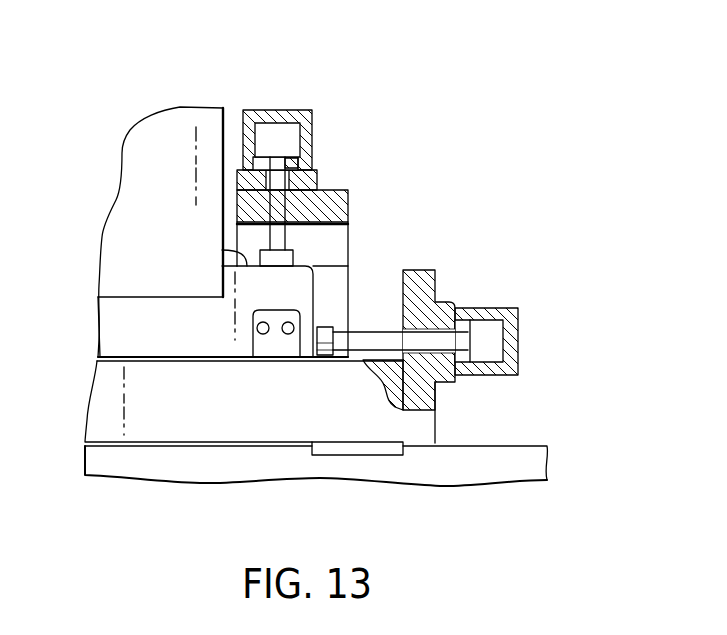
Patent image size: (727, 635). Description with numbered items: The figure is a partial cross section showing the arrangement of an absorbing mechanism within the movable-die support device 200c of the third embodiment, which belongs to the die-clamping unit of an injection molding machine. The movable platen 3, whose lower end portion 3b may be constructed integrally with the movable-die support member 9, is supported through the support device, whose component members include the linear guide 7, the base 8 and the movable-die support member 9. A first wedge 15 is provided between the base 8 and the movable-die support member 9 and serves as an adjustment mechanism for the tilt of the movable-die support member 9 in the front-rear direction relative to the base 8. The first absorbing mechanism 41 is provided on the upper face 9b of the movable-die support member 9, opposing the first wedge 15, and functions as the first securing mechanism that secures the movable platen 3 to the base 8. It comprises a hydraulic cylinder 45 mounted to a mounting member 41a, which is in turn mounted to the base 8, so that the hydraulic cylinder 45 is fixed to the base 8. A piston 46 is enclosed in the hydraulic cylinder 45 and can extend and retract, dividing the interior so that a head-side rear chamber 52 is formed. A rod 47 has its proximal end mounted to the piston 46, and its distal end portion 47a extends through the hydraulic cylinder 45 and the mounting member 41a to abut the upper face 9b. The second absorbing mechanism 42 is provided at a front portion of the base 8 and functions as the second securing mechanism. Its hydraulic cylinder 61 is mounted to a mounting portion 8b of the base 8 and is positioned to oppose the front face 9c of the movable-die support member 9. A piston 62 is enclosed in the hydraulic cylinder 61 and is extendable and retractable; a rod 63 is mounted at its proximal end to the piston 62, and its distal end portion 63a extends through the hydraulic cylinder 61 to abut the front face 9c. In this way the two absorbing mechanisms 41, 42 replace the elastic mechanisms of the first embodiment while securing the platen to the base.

The movable platen 3 is at (140, 192).
The lower end portion of the movable platen 3b is at (110, 285).
The linear guide 7 is at (520, 448).
The base 8 is at (427, 403).
The mounting portion of the base 8b is at (420, 270).
The movable-die support member 9 is at (110, 325).
The upper face of the movable-die support member 9b is at (222, 248).
The front face of the movable-die support member 9c is at (352, 266).
The first wedge 15 is at (278, 347).
The first absorbing mechanism 41 is at (283, 82).
The mounting member 41a is at (334, 205).
The second absorbing mechanism 42 is at (560, 333).
The hydraulic cylinder 45 is at (311, 112).
The piston 46 is at (312, 166).
The rod 47 is at (280, 238).
The distal end portion of the rod 47a is at (295, 257).
The rear chamber 52 is at (277, 140).
The hydraulic cylinder 61 is at (508, 308).
The piston 62 is at (462, 326).
The rod 63 is at (385, 338).
The distal end portion of the rod 63a is at (319, 328).
The movable-die support device 200c is at (473, 67).